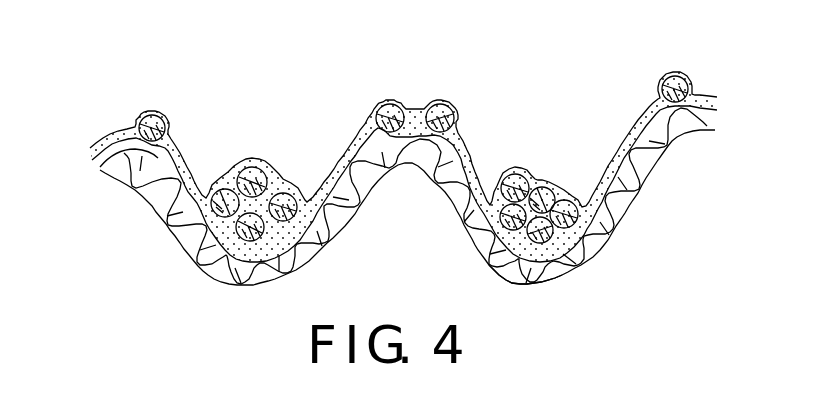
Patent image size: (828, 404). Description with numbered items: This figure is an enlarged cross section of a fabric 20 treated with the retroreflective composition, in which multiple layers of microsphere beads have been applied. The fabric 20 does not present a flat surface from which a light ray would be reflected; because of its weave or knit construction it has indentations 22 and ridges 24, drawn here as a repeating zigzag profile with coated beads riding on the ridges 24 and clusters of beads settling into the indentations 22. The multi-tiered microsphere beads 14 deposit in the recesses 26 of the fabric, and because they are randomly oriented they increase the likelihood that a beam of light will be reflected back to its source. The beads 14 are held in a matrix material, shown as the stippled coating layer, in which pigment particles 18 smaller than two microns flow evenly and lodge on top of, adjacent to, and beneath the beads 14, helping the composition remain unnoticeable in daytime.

The microsphere beads 14 is at (677, 75).
The pigment particles 18 is at (418, 110).
The fabric 20 is at (541, 288).
The indentations 22 is at (160, 254).
The ridges 24 is at (98, 121).
The recesses 26 is at (553, 142).